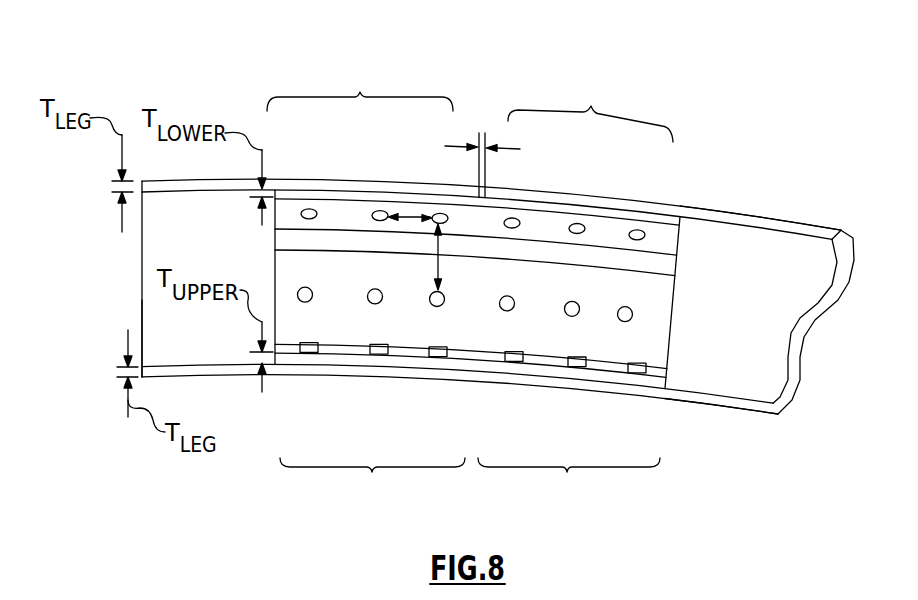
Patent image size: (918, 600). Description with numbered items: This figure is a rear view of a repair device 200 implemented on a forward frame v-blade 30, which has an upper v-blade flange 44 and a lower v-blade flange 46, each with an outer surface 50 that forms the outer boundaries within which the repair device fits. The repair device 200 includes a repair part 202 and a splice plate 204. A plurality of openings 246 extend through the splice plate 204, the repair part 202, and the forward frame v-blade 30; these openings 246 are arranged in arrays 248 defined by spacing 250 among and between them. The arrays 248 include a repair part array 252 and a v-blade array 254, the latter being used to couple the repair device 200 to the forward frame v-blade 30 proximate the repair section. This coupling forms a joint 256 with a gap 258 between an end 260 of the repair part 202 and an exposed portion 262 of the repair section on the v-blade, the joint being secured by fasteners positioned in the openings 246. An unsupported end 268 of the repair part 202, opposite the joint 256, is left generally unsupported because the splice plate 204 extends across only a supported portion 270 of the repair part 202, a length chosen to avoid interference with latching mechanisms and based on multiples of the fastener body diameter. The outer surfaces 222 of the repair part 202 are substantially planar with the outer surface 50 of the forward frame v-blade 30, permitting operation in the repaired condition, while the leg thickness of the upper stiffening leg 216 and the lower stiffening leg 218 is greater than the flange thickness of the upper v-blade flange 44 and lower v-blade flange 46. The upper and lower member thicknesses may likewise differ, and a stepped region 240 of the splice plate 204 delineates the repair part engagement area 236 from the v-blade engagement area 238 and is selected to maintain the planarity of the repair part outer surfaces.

The repair device 200 is at (766, 69).
The repair part 202 is at (130, 302).
The splice plate 204 is at (686, 231).
The upper stiffening leg 216 is at (340, 372).
The lower stiffening leg 218 is at (333, 186).
The outer surfaces 222 is at (360, 181).
The repair part engagement area 236 is at (372, 470).
The v-blade engagement area 238 is at (567, 470).
The stepped region 240 is at (484, 403).
The openings 246 is at (307, 209).
The arrays 248 is at (560, 79).
The spacing 250 is at (436, 250).
The repair part array 252 is at (360, 92).
The v-blade array 254 is at (591, 106).
The joint 256 is at (487, 108).
The gap 258 is at (512, 149).
The end of the repair part 260 is at (467, 372).
The exposed portion 262 is at (469, 372).
The unsupported end 268 is at (142, 317).
The supported portion 270 is at (293, 396).
The forward frame v-blade 30 is at (752, 301).
The upper v-blade flange 44 is at (678, 397).
The lower v-blade flange 46 is at (757, 219).
The outer surface 50 is at (663, 201).